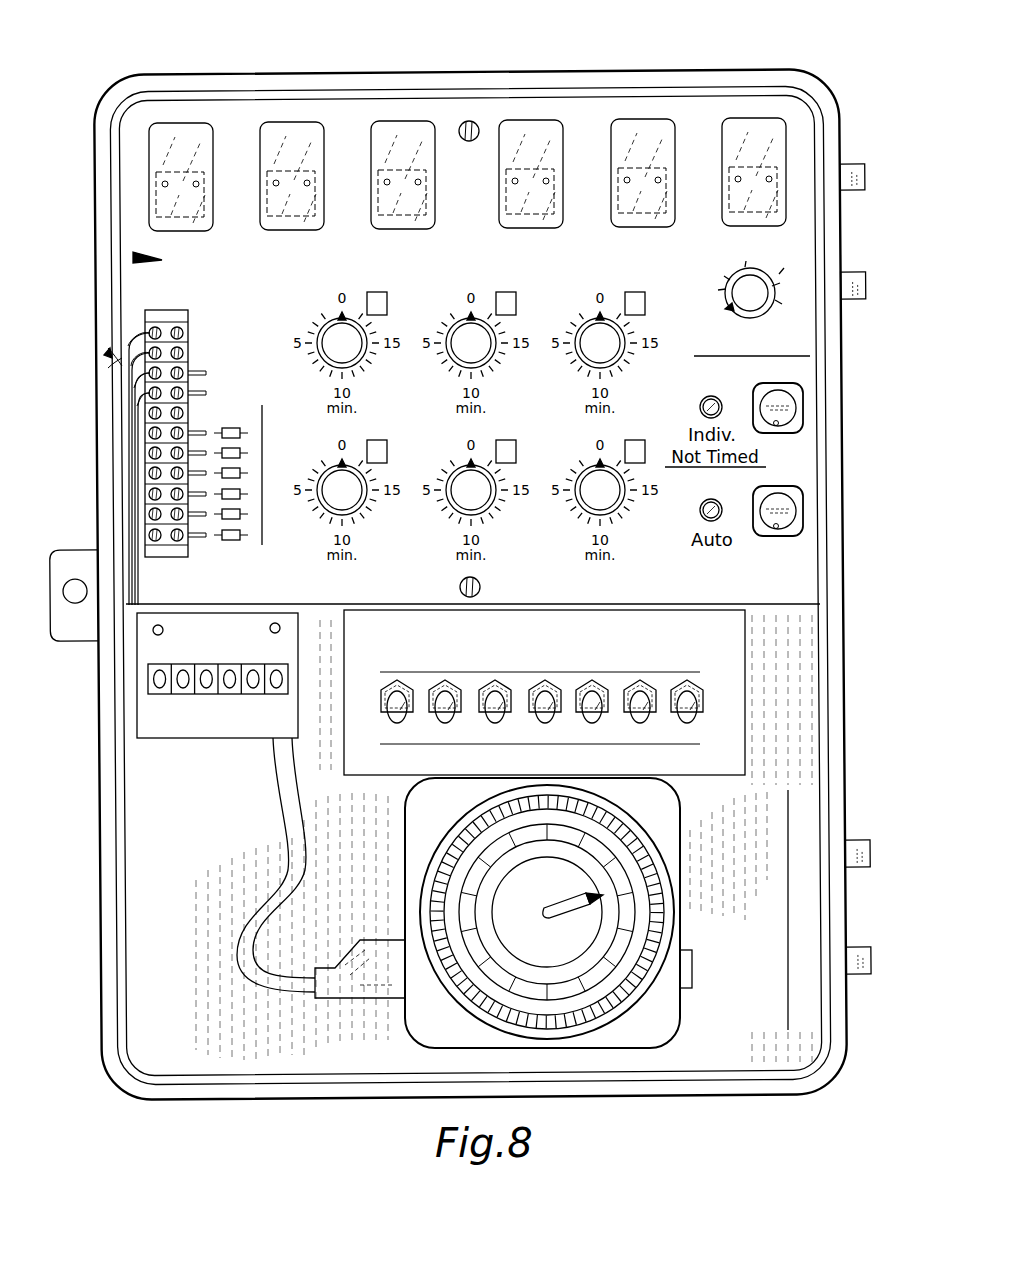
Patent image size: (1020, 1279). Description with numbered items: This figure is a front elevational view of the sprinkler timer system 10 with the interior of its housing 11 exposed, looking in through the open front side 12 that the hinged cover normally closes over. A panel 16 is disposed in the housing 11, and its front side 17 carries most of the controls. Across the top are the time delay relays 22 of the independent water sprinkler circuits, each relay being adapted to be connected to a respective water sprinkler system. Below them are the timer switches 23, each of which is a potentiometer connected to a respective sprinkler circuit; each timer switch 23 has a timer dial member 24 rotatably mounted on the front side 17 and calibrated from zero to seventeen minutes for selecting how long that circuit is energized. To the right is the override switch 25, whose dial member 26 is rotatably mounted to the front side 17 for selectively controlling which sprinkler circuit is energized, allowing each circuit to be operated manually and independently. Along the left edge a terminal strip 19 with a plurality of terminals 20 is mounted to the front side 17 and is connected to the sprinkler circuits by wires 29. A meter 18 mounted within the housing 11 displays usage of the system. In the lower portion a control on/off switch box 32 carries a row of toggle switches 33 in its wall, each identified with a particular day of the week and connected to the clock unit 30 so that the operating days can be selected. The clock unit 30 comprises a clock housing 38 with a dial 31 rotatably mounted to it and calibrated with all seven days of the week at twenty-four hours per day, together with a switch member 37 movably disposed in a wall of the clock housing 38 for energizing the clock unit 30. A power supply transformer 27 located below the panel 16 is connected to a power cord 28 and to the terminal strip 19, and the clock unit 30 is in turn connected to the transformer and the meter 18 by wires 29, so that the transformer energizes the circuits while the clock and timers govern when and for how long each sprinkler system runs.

The sprinkler timer system 10 is at (730, 50).
The housing 11 is at (553, 78).
The open front side 12 is at (134, 257).
The panel 16 is at (132, 160).
The front side 17 is at (692, 115).
The meter 18 is at (185, 730).
The terminal strip 19 is at (150, 550).
The terminals 20 is at (106, 355).
The time delay relays 22 is at (407, 130).
The timer switches 23 is at (332, 341).
The timer dial member 24 is at (347, 332).
The override switch 25 is at (770, 275).
The dial member 26 is at (767, 310).
The power supply transformer 27 is at (727, 905).
The power cord 28 is at (333, 992).
The wires 29 is at (150, 326).
The clock unit 30 is at (417, 828).
The dial 31 is at (580, 1017).
The control on/off switch box 32 is at (725, 668).
The toggle switches 33 is at (596, 708).
The switch member 37 is at (691, 982).
The clock housing 38 is at (432, 1043).